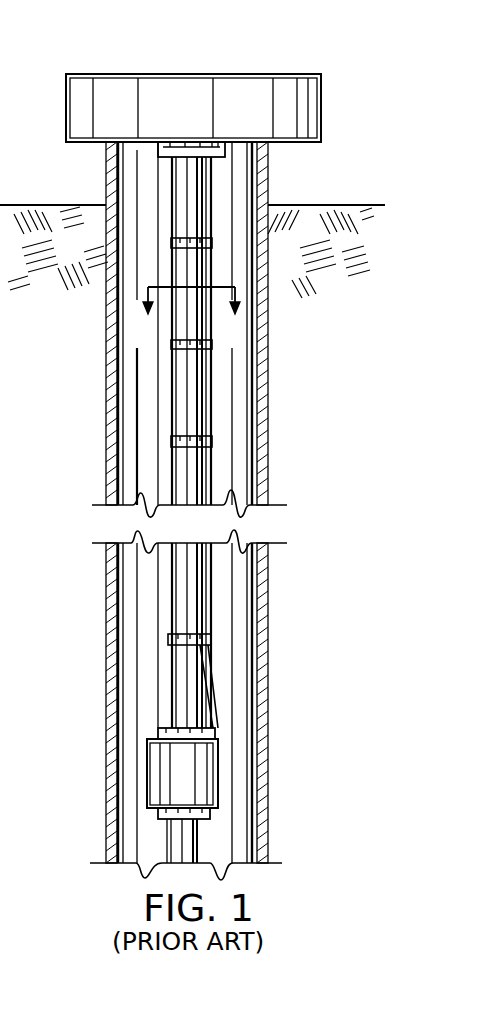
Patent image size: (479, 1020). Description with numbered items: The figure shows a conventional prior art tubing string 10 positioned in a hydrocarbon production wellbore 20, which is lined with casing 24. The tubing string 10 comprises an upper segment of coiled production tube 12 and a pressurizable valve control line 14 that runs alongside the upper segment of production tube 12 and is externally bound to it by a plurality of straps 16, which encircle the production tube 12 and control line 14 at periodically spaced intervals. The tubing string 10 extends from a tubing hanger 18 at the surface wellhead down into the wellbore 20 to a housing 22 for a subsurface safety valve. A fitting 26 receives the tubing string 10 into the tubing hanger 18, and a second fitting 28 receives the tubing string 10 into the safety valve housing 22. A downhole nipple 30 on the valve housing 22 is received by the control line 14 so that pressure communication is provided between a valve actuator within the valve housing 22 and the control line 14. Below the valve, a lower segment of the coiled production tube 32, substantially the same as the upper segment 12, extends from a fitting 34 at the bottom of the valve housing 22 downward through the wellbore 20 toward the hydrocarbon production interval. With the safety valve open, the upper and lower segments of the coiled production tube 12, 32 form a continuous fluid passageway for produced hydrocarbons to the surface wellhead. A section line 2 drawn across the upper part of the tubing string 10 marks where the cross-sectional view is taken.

The tubing string 10 is at (175, 393).
The upper segment of coiled production tube 12 is at (188, 190).
The pressurizable valve control line 14 is at (210, 172).
The straps 16 is at (172, 243).
The tubing hanger 18 is at (322, 106).
The hydrocarbon production wellbore 20 is at (232, 470).
The housing for a subsurface safety valve 22 is at (170, 781).
The casing 24 is at (124, 478).
The fitting 26 is at (158, 150).
The fitting 28 is at (158, 730).
The downhole nipple 30 is at (218, 733).
The lower segment of coiled production tube 32 is at (165, 838).
The fitting 34 is at (210, 815).
The section line 2- 2 is at (190, 316).